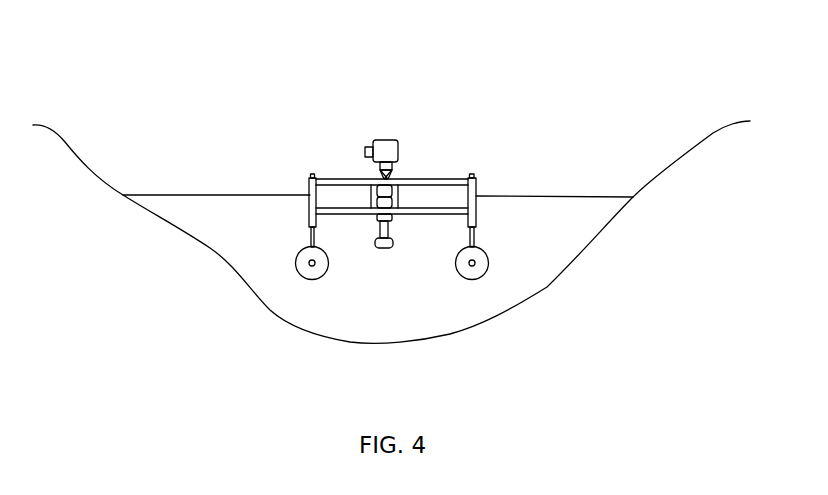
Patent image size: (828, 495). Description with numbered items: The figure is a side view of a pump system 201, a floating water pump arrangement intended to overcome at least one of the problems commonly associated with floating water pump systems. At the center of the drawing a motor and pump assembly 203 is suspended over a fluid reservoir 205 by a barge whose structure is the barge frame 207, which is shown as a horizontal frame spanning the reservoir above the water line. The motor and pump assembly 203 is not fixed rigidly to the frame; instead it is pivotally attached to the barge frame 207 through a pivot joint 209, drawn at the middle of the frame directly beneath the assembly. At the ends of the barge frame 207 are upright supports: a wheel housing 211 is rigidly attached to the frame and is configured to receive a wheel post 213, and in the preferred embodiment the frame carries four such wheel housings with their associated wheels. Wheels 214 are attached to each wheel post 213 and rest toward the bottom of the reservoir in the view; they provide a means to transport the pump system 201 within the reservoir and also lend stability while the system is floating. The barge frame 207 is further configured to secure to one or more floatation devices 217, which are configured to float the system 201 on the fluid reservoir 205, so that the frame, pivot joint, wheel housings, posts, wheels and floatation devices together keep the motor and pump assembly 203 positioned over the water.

The pump system 201 is at (219, 68).
The motor and pump assembly 203 is at (388, 147).
The fluid reservoir 205 is at (303, 311).
The barge frame 207 is at (343, 180).
The pivot joint 209 is at (386, 178).
The wheel housing 211 is at (478, 193).
The wheel post 213 is at (476, 237).
The wheels 214 is at (484, 273).
The floatation device 217 is at (317, 205).